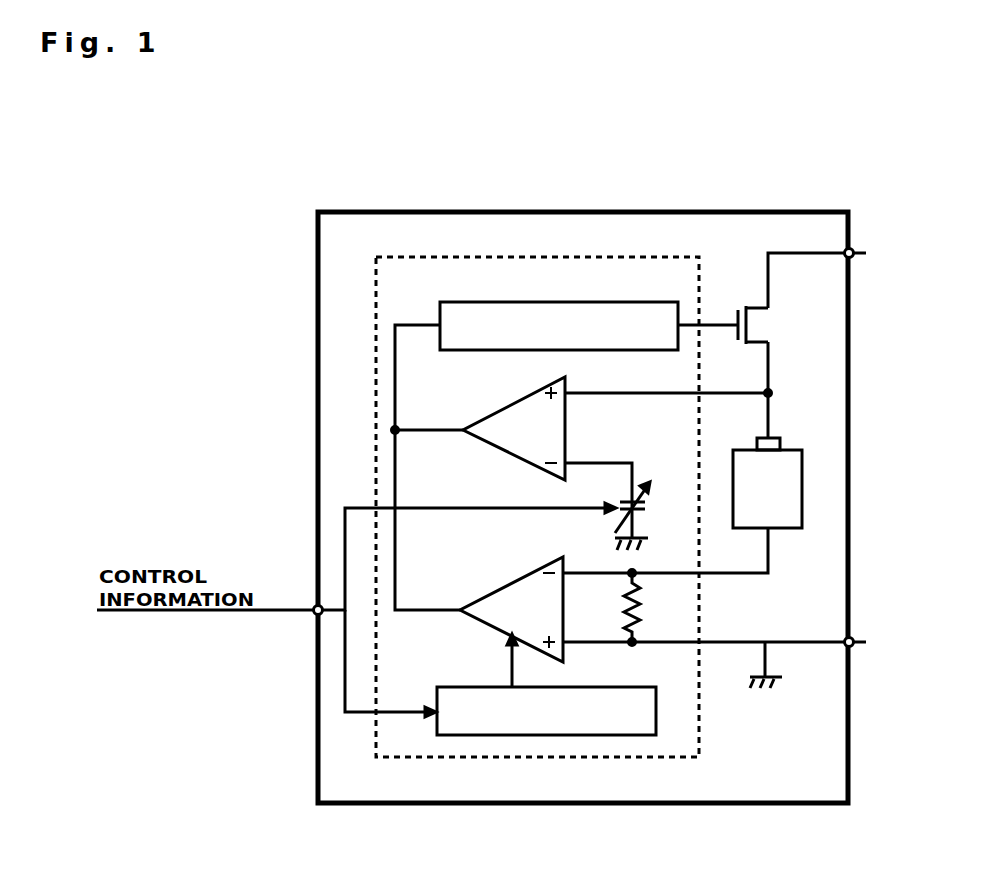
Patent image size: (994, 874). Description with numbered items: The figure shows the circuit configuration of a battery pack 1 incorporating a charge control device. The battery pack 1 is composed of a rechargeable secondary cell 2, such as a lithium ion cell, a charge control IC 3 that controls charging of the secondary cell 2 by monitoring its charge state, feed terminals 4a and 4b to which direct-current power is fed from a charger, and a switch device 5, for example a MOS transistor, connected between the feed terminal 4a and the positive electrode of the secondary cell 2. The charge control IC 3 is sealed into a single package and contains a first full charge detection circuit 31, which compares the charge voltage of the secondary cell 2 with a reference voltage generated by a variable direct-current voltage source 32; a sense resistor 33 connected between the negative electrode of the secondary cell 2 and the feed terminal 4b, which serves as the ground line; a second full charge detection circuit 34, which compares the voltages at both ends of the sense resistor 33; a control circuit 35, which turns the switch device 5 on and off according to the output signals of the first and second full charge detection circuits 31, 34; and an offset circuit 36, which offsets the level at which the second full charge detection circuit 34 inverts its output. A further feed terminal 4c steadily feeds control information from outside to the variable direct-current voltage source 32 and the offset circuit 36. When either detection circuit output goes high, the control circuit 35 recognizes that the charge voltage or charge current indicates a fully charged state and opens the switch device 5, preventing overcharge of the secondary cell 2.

The battery pack 1 is at (485, 212).
The secondary cell 2 is at (802, 490).
The charge control IC 3 is at (434, 257).
The feed terminal 4a is at (870, 255).
The feed terminal 4b is at (871, 644).
The feed terminal 4c is at (314, 615).
The switch device 5 is at (768, 325).
The first full charge detection circuit 31 is at (512, 402).
The variable direct-current voltage source 32 is at (647, 508).
The sense resistor 33 is at (643, 606).
The second full charge detection circuit 34 is at (512, 583).
The control circuit 35 is at (510, 302).
The offset circuit 36 is at (476, 687).